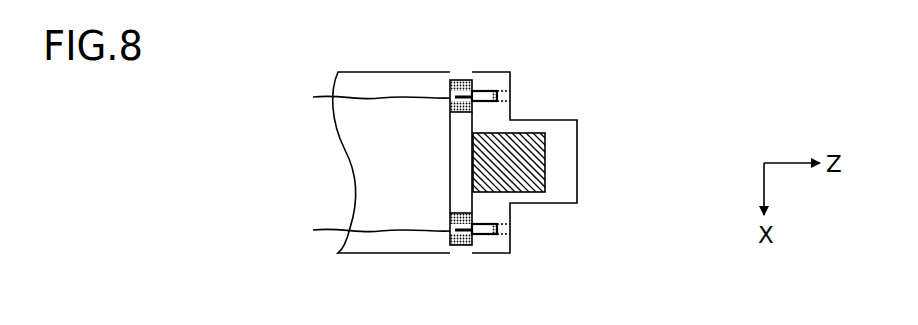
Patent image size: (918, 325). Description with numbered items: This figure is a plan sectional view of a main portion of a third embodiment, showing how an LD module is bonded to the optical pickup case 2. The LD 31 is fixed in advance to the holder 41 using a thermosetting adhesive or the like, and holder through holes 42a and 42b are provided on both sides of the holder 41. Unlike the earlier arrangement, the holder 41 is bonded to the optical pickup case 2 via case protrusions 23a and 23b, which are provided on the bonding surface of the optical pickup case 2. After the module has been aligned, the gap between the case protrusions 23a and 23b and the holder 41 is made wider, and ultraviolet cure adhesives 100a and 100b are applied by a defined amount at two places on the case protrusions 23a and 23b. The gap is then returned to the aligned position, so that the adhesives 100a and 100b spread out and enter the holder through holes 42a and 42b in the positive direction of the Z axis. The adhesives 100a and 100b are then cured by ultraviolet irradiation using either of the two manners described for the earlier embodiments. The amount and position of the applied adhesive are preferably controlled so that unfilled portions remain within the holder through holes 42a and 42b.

The optical pickup case 2 is at (357, 180).
The case protrusion 23a is at (367, 97).
The case protrusion 23b is at (367, 232).
The LD 31 is at (545, 178).
The holder 41 is at (571, 133).
The holder through hole 42a is at (510, 96).
The holder through hole 42b is at (510, 229).
The ultraviolet cure adhesive 100a is at (460, 72).
The ultraviolet cure adhesive 100b is at (462, 253).